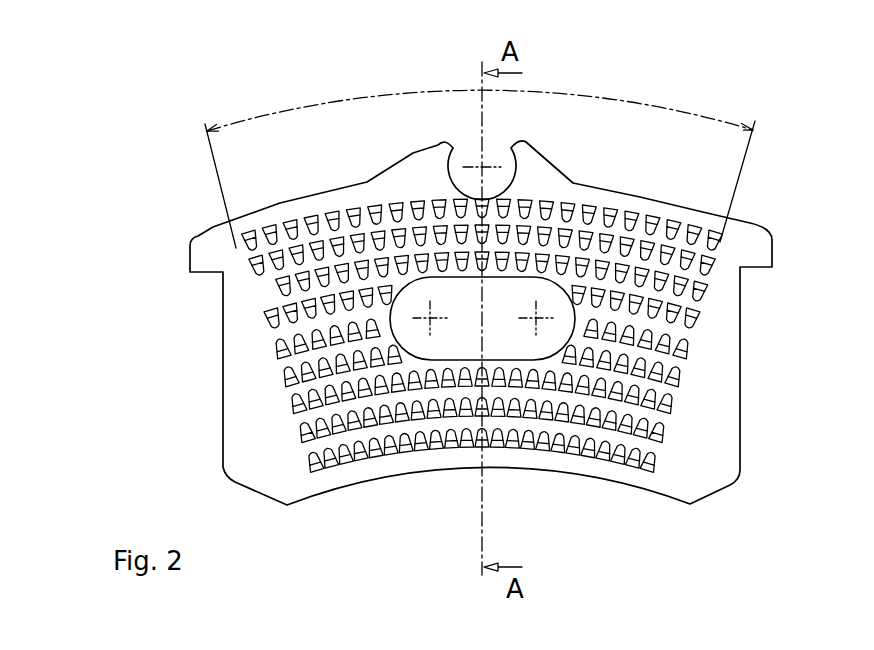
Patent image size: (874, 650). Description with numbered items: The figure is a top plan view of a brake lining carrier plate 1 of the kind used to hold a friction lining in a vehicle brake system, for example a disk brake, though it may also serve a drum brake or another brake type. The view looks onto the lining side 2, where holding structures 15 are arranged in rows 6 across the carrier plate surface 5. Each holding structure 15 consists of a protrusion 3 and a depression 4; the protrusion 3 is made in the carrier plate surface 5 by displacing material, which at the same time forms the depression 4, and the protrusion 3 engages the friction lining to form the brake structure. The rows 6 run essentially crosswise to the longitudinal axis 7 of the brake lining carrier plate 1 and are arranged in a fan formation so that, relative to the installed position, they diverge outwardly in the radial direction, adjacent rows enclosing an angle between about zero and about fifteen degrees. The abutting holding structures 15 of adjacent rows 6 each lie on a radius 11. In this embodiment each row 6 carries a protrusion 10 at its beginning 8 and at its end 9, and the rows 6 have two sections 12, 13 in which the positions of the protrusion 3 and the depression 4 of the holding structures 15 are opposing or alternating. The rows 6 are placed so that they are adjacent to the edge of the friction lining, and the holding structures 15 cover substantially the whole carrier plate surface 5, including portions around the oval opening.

The brake lining carrier plate 1 is at (609, 140).
The lining side 2 is at (240, 413).
The protrusion 3 is at (298, 218).
The depression 4 is at (398, 203).
The carrier plate surface 5 is at (255, 458).
The rows 6 is at (350, 465).
The longitudinal axis 7 is at (717, 368).
The beginning of row 8 is at (658, 472).
The end of row 9 is at (722, 252).
The protrusion 10 is at (720, 236).
The radius 11 is at (567, 502).
The section 12 is at (715, 311).
The section 13 is at (697, 400).
The holding structures 15 is at (322, 202).